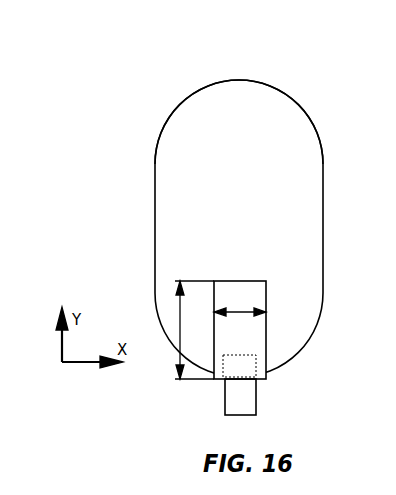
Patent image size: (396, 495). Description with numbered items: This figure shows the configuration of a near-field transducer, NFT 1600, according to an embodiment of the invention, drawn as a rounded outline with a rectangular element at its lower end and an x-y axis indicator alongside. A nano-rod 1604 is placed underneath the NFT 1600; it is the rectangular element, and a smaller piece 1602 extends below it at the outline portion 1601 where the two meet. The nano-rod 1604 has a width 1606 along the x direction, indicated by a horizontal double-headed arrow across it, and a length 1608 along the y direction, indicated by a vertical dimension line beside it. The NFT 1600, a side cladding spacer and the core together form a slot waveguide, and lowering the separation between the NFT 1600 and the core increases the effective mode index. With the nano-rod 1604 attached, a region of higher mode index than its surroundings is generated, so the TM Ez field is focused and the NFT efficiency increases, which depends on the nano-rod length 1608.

The near-field transducer 1600 is at (110, 189).
The housing with rounded profile 1601 is at (215, 92).
The connector / stem 1602 is at (233, 393).
The nano-rod 1604 is at (252, 281).
The width 1606 is at (266, 312).
The length 1608 is at (180, 312).